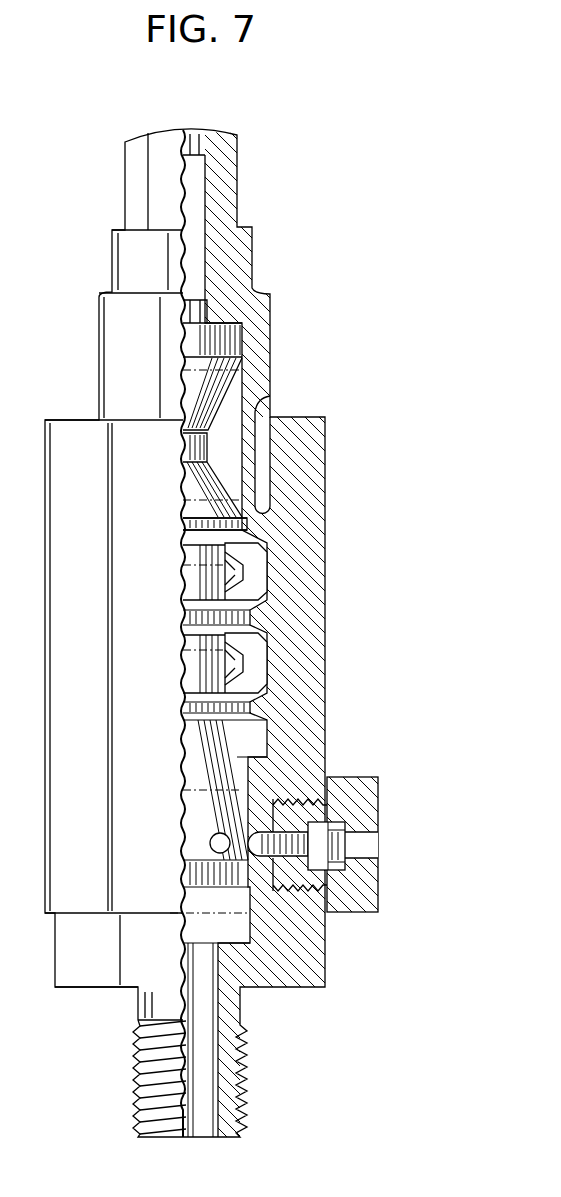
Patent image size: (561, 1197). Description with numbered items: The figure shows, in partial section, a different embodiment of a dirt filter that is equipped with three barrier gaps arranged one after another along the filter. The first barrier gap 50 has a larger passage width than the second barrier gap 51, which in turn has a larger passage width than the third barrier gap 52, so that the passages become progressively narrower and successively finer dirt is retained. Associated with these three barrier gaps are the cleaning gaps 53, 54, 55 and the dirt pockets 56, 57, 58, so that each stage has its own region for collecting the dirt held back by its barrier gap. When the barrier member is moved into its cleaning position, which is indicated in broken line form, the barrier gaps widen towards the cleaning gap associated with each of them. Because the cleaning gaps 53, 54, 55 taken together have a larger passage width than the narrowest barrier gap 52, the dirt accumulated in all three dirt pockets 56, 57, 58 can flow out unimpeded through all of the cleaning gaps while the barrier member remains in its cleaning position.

The barrier gap 50 is at (242, 526).
The barrier gap 51 is at (243, 617).
The barrier gap 52 is at (250, 708).
The cleaning gap 53 is at (260, 587).
The cleaning gap 54 is at (253, 652).
The cleaning gap 55 is at (248, 765).
The dirt pocket 56 is at (248, 567).
The dirt pocket 57 is at (255, 675).
The dirt pocket 58 is at (217, 778).